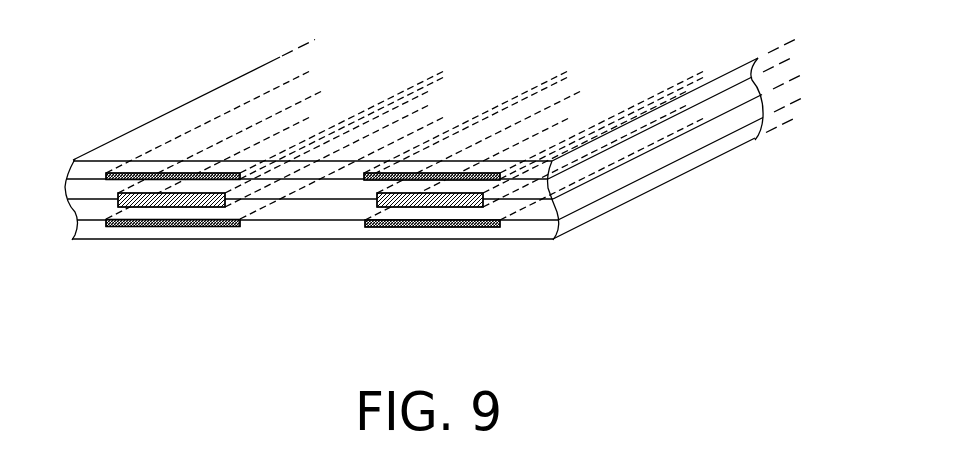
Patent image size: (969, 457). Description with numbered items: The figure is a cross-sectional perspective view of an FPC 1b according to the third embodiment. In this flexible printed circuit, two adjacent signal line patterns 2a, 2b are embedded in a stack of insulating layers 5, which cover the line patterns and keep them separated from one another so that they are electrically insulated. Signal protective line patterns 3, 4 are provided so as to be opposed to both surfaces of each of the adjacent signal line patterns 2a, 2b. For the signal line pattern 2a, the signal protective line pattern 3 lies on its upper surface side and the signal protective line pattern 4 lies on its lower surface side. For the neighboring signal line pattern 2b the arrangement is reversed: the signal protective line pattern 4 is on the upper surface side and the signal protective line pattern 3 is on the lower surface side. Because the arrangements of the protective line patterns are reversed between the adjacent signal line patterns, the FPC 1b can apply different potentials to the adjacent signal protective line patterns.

The FPC 1b is at (259, 47).
The signal line pattern 2a is at (483, 206).
The signal line pattern 2b is at (226, 206).
The signal protective line pattern 3 is at (197, 226).
The signal protective line pattern 4 is at (107, 177).
The insulating layer 5 is at (74, 164).